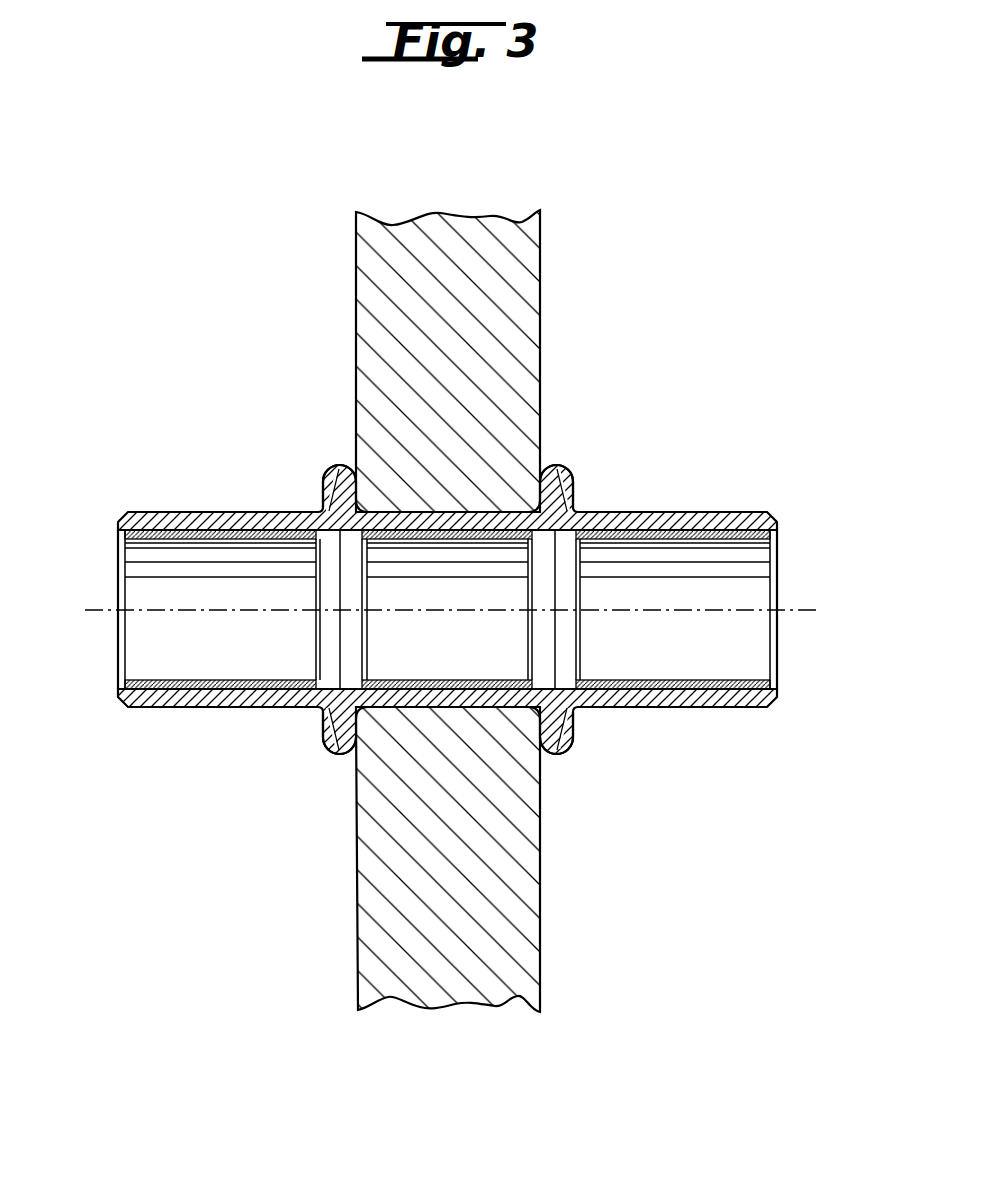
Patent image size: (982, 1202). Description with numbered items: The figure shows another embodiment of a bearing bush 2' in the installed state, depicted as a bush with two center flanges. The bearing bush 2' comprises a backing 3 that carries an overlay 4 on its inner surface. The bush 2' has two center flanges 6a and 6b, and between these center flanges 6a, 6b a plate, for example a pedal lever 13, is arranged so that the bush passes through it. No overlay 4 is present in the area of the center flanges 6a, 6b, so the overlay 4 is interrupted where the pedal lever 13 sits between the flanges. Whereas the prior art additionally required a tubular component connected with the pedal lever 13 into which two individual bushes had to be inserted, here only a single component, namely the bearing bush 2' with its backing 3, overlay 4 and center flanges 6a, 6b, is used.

The pedal lever 13 is at (495, 327).
The backing 3 is at (652, 707).
The center flange 6a is at (335, 470).
The center flange 6b is at (563, 467).
The overlay 4 is at (163, 683).
The bearing bush 2' is at (451, 534).